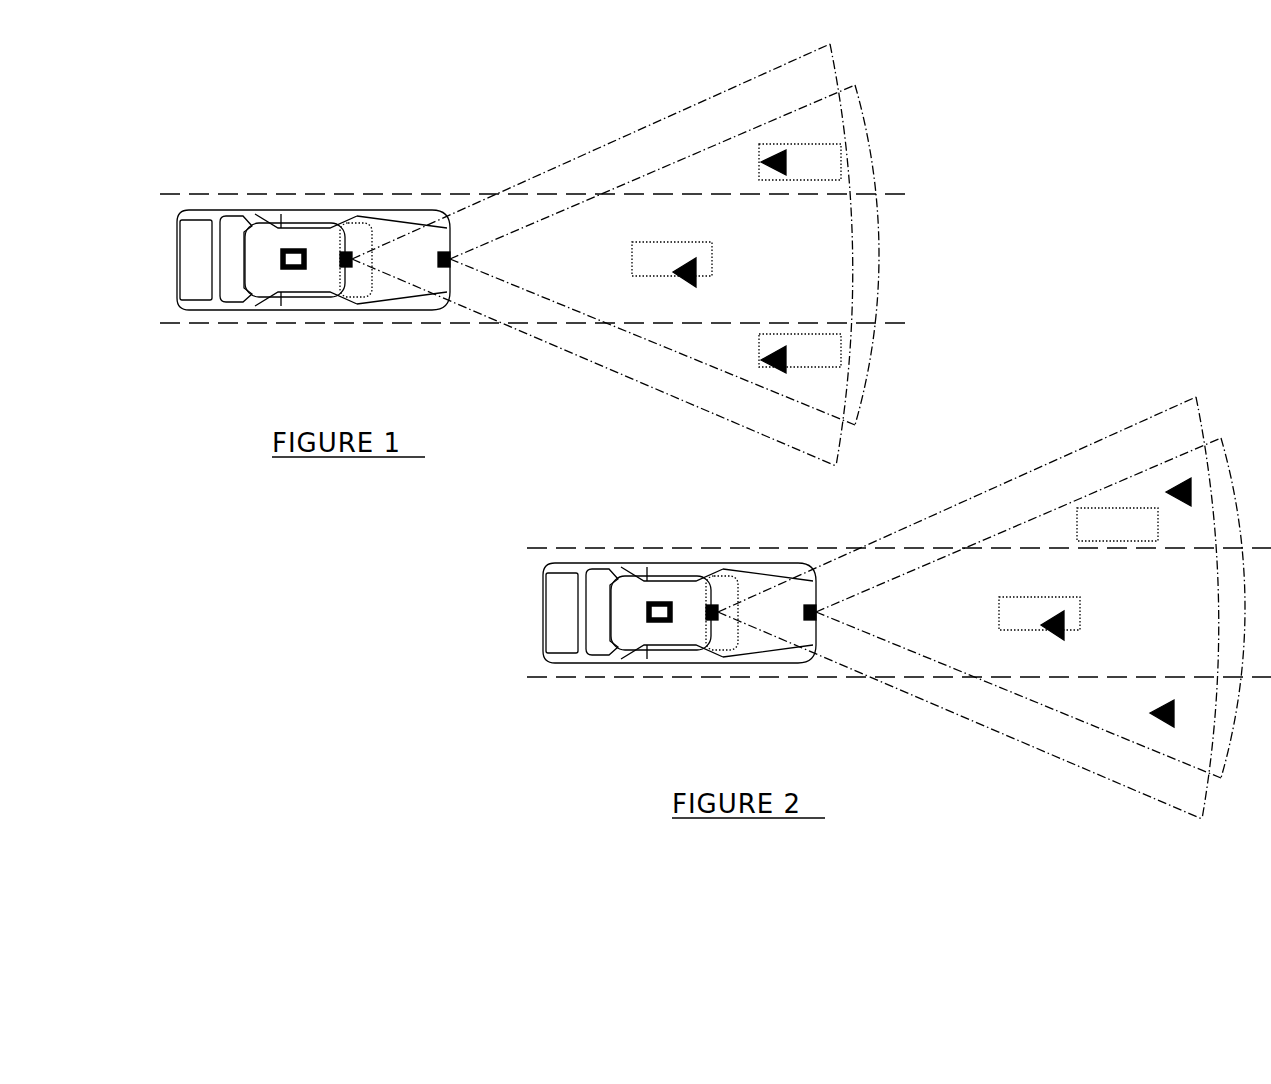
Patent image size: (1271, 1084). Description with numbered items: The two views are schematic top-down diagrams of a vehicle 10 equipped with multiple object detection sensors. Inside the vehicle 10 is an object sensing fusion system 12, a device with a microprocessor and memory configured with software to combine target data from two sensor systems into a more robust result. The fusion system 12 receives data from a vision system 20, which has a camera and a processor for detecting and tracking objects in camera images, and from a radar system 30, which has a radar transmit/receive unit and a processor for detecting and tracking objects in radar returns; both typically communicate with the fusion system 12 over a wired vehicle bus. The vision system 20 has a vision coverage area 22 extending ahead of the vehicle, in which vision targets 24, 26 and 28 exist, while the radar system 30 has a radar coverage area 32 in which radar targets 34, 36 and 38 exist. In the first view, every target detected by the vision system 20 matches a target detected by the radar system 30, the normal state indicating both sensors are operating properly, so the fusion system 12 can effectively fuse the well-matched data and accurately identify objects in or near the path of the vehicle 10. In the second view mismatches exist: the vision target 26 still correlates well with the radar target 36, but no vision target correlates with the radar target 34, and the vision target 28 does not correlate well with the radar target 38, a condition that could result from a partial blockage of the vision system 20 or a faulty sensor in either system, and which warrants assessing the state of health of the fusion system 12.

In FIG. 1, the vehicle 10 is at (225, 208).
In FIG. 2, the vehicle 10 is at (573, 660).
In FIG. 1, the object sensing fusion system 12 is at (292, 270).
In FIG. 2, the object sensing fusion system 12 is at (660, 623).
In FIG. 1, the vision system 20 is at (348, 250).
In FIG. 2, the vision system 20 is at (712, 622).
In FIG. 1, the vision coverage area 22 is at (689, 106).
In FIG. 2, the vision coverage area 22 is at (1074, 773).
In FIG. 1, the vision target 24 is at (807, 335).
In FIG. 1, the vision target 26 is at (632, 246).
In FIG. 2, the vision target 26 is at (999, 599).
In FIG. 1, the vision target 28 is at (823, 180).
In FIG. 2, the vision target 28 is at (1141, 541).
In FIG. 1, the radar system 30 is at (445, 252).
In FIG. 2, the radar system 30 is at (805, 622).
In FIG. 1, the radar coverage area 32 is at (871, 142).
In FIG. 2, the radar coverage area 32 is at (1233, 775).
In FIG. 1, the radar target 34 is at (779, 350).
In FIG. 2, the radar target 34 is at (1165, 707).
In FIG. 1, the radar target 36 is at (695, 284).
In FIG. 2, the radar target 36 is at (1064, 636).
In FIG. 1, the radar target 38 is at (777, 167).
In FIG. 2, the radar target 38 is at (1185, 502).